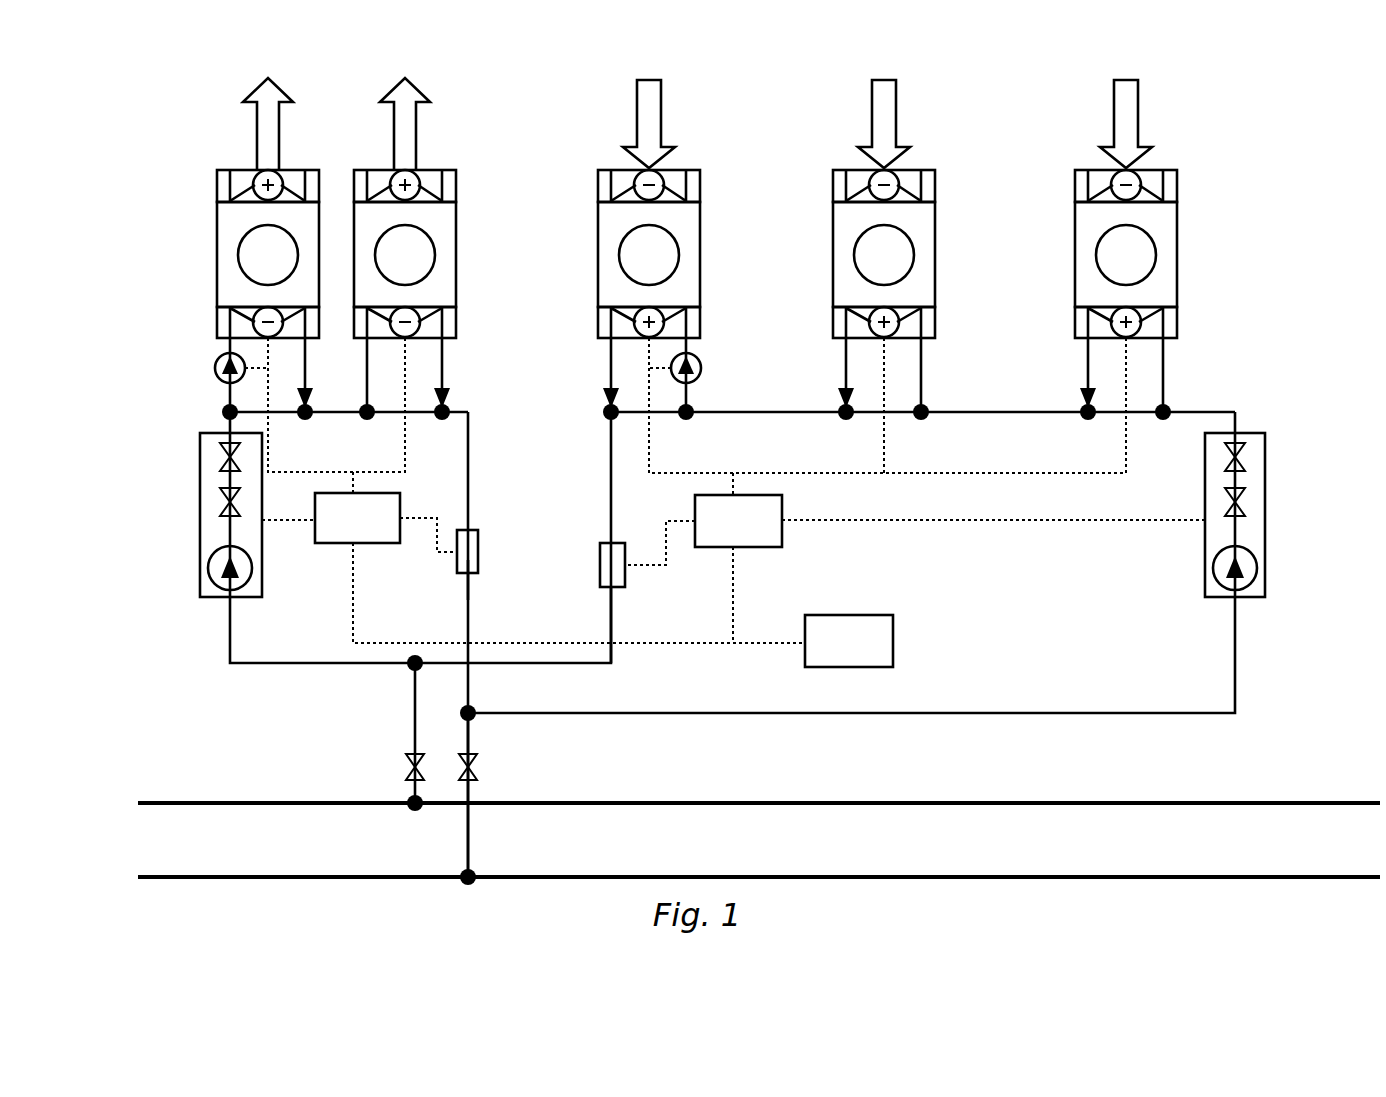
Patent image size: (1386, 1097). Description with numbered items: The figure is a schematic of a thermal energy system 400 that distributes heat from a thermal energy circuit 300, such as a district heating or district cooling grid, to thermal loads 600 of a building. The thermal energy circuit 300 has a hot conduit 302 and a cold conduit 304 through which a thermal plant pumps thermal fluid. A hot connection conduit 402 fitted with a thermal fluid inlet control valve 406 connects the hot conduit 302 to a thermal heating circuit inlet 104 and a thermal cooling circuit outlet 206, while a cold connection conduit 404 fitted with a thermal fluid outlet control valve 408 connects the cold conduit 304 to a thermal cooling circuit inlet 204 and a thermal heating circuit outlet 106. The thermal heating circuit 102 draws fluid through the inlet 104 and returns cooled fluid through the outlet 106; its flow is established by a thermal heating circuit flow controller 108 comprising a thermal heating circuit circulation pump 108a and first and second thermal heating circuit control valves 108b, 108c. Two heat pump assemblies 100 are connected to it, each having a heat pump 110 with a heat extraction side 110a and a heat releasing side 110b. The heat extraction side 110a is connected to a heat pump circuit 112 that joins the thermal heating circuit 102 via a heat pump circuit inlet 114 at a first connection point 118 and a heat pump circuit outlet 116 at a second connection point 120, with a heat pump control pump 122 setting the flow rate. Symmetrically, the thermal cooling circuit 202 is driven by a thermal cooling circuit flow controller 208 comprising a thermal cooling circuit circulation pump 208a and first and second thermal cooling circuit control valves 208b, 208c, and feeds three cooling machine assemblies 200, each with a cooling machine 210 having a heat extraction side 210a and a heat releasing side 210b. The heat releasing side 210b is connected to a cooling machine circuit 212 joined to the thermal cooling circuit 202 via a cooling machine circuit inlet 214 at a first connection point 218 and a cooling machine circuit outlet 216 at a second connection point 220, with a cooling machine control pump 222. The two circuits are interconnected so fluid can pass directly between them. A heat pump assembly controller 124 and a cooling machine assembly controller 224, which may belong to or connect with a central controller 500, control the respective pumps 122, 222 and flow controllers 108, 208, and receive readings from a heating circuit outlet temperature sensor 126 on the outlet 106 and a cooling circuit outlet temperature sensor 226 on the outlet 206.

The heat pump assembly 100 is at (317, 204).
The thermal heating circuit 102 is at (485, 498).
The thermal heating circuit inlet 104 is at (293, 663).
The thermal heating circuit outlet 106 is at (468, 596).
The thermal heating circuit flow controller 108 is at (174, 504).
The thermal heating circuit circulation pump 108a is at (212, 575).
The first thermal heating circuit control valve 108b is at (225, 502).
The second thermal heating circuit control valve 108c is at (225, 455).
The heat pump 110 is at (282, 215).
The heat extraction side 110a is at (217, 320).
The heat releasing side 110b is at (217, 185).
The heat pump circuit 112 is at (274, 386).
The heat pump circuit inlet 114 is at (228, 398).
The heat pump circuit outlet 116 is at (305, 388).
The first connection point 118 is at (228, 418).
The second connection point 120 is at (305, 422).
The heat pump control pump 122 is at (217, 362).
The heat pump assembly controller 124 is at (533, 490).
The heating circuit outlet temperature sensor 126 is at (480, 545).
The cooling machine assembly 200 is at (899, 216).
The thermal cooling circuit 202 is at (1222, 390).
The thermal cooling circuit inlet 204 is at (1235, 700).
The thermal cooling circuit outlet 206 is at (615, 605).
The thermal cooling circuit flow controller 208 is at (1276, 515).
The thermal cooling circuit circulation pump 208a is at (1256, 565).
The first thermal cooling circuit control valve 208b is at (1245, 498).
The second thermal cooling circuit control valve 208c is at (1245, 455).
The cooling machine 210 is at (857, 223).
The heat extraction side 210a is at (598, 195).
The heat releasing side 210b is at (598, 318).
The cooling machine circuit 212 is at (874, 398).
The cooling machine circuit inlet 214 is at (690, 402).
The cooling machine circuit outlet 216 is at (608, 400).
The first connection point 218 is at (695, 418).
The second connection point 220 is at (605, 416).
The cooling machine control pump 222 is at (703, 368).
The cooling machine assembly controller 224 is at (915, 490).
The cooling circuit outlet temperature sensor 226 is at (598, 567).
The thermal energy circuit 300 is at (743, 825).
The hot conduit 302 is at (138, 803).
The cold conduit 304 is at (185, 877).
The thermal energy system 400 is at (461, 470).
The hot connection conduit 402 is at (413, 715).
The cold connection conduit 404 is at (478, 728).
The thermal fluid inlet control valve 406 is at (410, 785).
The thermal fluid outlet control valve 408 is at (478, 775).
The central controller 500 is at (849, 641).
The thermal load 600 is at (283, 120).